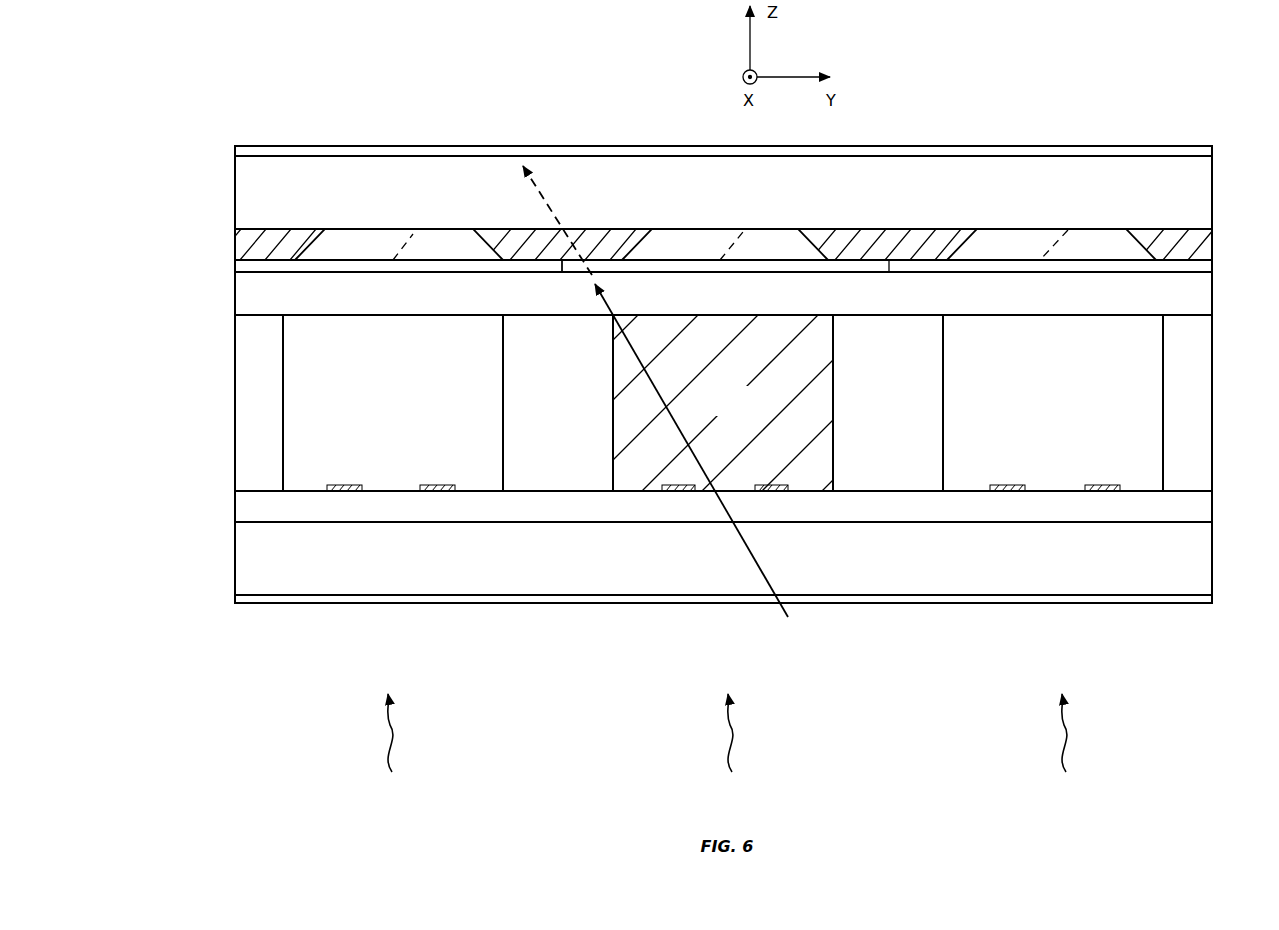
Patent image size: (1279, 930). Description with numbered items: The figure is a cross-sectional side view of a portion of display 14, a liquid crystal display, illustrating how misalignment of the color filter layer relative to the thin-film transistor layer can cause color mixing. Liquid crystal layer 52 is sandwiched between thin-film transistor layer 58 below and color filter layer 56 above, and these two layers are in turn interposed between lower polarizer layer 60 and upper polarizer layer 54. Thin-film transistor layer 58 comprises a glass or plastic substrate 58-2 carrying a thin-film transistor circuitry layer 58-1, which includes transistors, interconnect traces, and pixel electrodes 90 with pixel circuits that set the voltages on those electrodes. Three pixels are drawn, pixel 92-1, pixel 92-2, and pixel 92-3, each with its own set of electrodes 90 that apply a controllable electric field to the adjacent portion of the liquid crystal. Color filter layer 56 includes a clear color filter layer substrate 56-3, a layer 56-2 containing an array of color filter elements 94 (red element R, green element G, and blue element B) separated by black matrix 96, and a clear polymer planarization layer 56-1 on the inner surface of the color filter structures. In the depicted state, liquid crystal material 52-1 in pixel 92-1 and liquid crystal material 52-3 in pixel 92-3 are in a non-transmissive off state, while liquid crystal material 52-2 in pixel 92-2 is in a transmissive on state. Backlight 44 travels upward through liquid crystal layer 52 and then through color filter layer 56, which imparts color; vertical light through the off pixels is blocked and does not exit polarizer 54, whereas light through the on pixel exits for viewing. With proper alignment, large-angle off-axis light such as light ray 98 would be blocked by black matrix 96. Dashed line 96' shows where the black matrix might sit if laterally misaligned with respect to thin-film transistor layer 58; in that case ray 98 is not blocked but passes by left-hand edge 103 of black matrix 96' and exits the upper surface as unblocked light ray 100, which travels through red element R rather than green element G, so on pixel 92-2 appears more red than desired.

The display 14 is at (1020, 74).
The backlight 44 is at (396, 726).
The liquid crystal layer 52 is at (212, 316).
The liquid crystal material 52-1 is at (490, 406).
The liquid crystal material 52-2 is at (818, 406).
The liquid crystal material 52-3 is at (1200, 406).
The upper polarizer layer 54 is at (254, 148).
The color filter layer 56 is at (212, 146).
The planarization layer 56-1 is at (1197, 292).
The color filter structures layer 56-2 is at (1224, 230).
The color filter layer substrate 56-3 is at (1224, 146).
The thin-film transistor layer 58 is at (212, 492).
The thin-film transistor circuitry layer 58-1 is at (1198, 507).
The substrate 58-2 is at (1198, 551).
The lower polarizer layer 60 is at (235, 598).
The pixel electrodes 90 is at (345, 485).
The pixel 92-1 is at (502, 617).
The pixel 92-2 is at (617, 617).
The pixel 92-3 is at (1162, 617).
The color filter elements 94 is at (452, 238).
The black matrix 96 is at (727, 229).
The misaligned black matrix 96' is at (754, 279).
The light ray 98 is at (600, 312).
The unblocked light ray 100 is at (540, 190).
The left-hand edge 103 is at (568, 262).